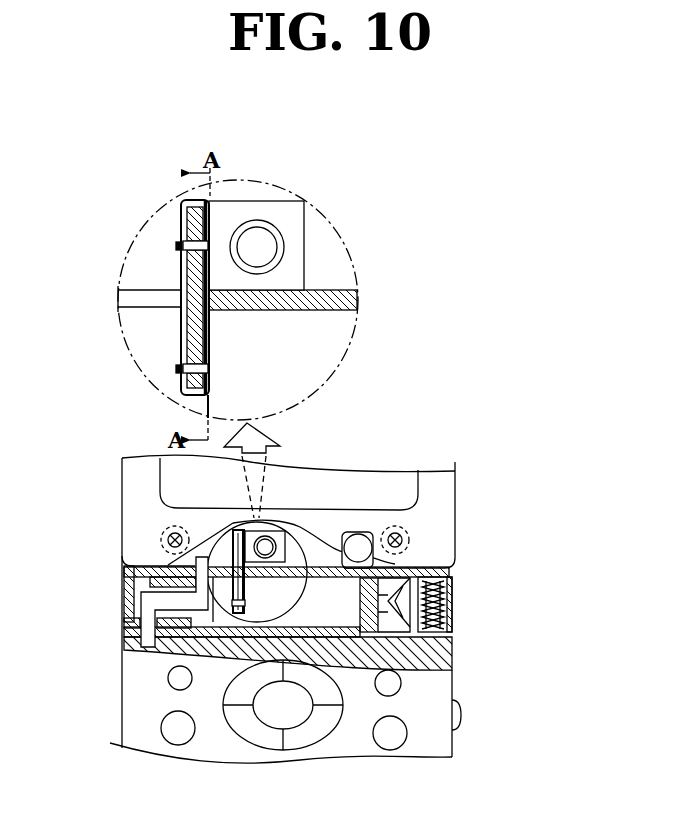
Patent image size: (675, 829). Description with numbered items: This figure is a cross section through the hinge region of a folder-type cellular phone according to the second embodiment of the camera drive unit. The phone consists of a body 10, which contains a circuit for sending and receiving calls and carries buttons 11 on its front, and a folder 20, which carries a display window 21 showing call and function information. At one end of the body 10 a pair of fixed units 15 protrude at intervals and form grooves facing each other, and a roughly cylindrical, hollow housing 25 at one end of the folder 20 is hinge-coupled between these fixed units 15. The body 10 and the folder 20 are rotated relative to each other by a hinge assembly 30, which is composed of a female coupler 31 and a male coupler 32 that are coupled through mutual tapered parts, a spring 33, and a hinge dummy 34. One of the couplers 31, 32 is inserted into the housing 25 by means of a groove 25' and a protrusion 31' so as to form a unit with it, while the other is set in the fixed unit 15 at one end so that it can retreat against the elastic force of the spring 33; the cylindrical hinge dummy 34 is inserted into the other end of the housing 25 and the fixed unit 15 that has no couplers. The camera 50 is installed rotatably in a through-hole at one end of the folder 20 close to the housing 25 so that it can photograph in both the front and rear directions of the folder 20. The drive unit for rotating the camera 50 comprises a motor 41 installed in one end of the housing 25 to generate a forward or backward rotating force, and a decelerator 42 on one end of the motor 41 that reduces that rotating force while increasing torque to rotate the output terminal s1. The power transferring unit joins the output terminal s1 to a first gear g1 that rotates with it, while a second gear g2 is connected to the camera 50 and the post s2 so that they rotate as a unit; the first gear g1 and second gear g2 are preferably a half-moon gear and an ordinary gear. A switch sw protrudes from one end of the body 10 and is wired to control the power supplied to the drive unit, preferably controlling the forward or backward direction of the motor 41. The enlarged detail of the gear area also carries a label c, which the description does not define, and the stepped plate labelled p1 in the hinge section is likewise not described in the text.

The body 10 is at (460, 748).
The buttons 11 is at (172, 740).
The fixed units 15 is at (452, 592).
The folder 20 is at (464, 539).
The display window 21 is at (408, 472).
The housing 25 is at (146, 615).
The groove 25' is at (301, 524).
The hinge assembly 30 is at (449, 575).
The female coupler 31 is at (412, 704).
The protrusion 31' is at (418, 520).
The male coupler 32 is at (447, 677).
The spring 33 is at (452, 635).
The hinge dummy 34 is at (123, 592).
The motor 41 is at (336, 576).
The decelerator 42 is at (288, 576).
The camera 50 is at (297, 203).
The cap c is at (181, 386).
The first gear g1 is at (181, 358).
The second gear g2 is at (183, 229).
The plate p1 is at (138, 604).
The output terminal s1 is at (207, 370).
The post s2 is at (212, 244).
The switch sw is at (460, 718).